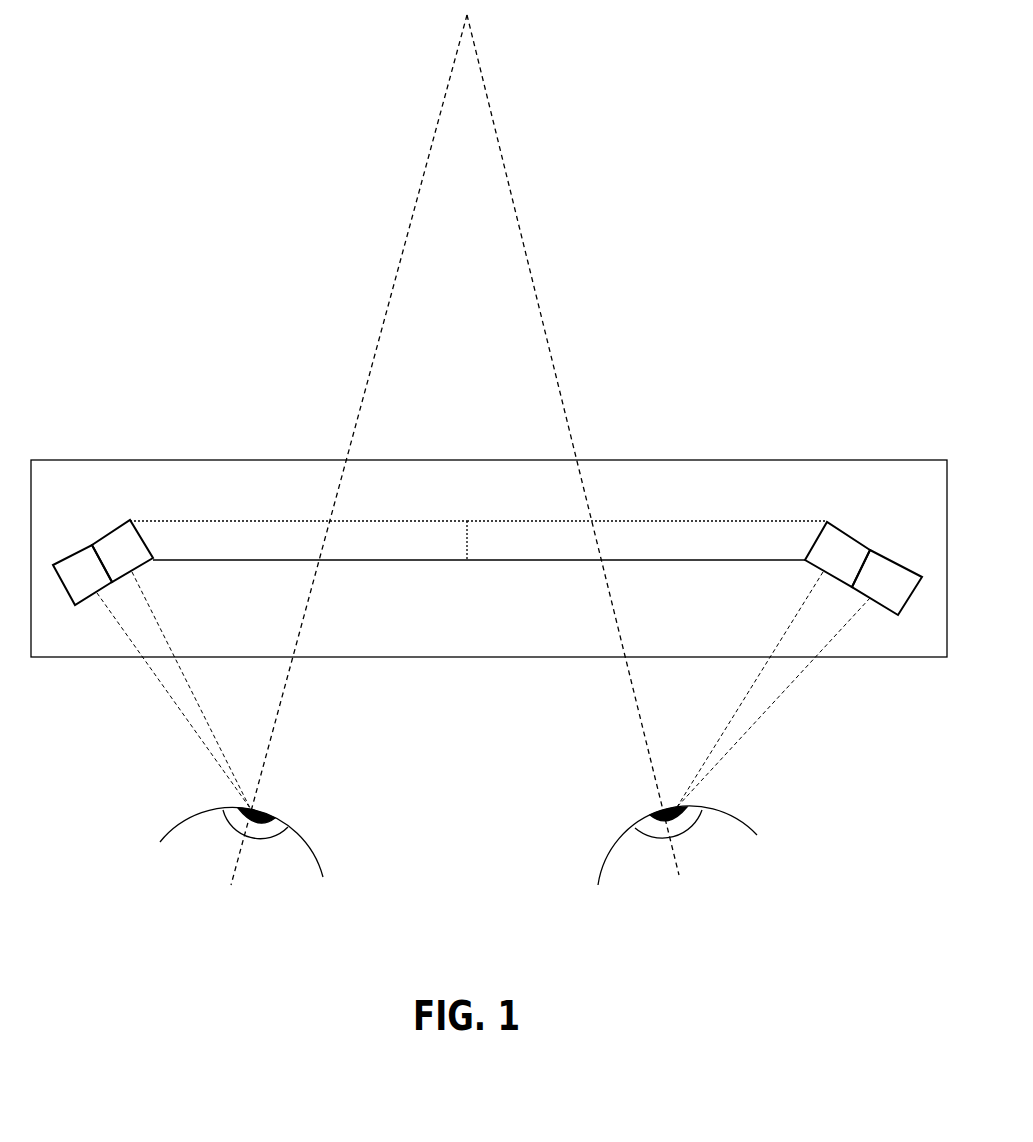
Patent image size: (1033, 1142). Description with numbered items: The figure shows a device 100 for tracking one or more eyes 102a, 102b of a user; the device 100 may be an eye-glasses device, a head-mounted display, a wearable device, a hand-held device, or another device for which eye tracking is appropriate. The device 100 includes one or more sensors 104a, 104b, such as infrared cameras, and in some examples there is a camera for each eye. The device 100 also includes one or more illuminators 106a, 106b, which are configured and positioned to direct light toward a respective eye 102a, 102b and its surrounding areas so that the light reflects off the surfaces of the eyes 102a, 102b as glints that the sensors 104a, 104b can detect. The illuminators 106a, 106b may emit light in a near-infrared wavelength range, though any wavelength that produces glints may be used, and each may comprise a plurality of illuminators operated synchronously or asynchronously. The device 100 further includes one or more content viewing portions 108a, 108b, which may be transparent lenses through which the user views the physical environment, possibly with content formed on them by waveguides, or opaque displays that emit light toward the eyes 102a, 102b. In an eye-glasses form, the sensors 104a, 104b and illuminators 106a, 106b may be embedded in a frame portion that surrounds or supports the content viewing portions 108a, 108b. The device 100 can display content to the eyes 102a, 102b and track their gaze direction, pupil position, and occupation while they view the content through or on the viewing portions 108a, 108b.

The device 100 is at (72, 485).
The eye 102a is at (178, 842).
The eye 102b is at (608, 858).
The sensor 104a is at (102, 583).
The sensor 104b is at (908, 592).
The illuminator 106a is at (148, 564).
The illuminator 106b is at (860, 564).
The content viewing portion 108a is at (185, 520).
The content viewing portion 108b is at (738, 520).